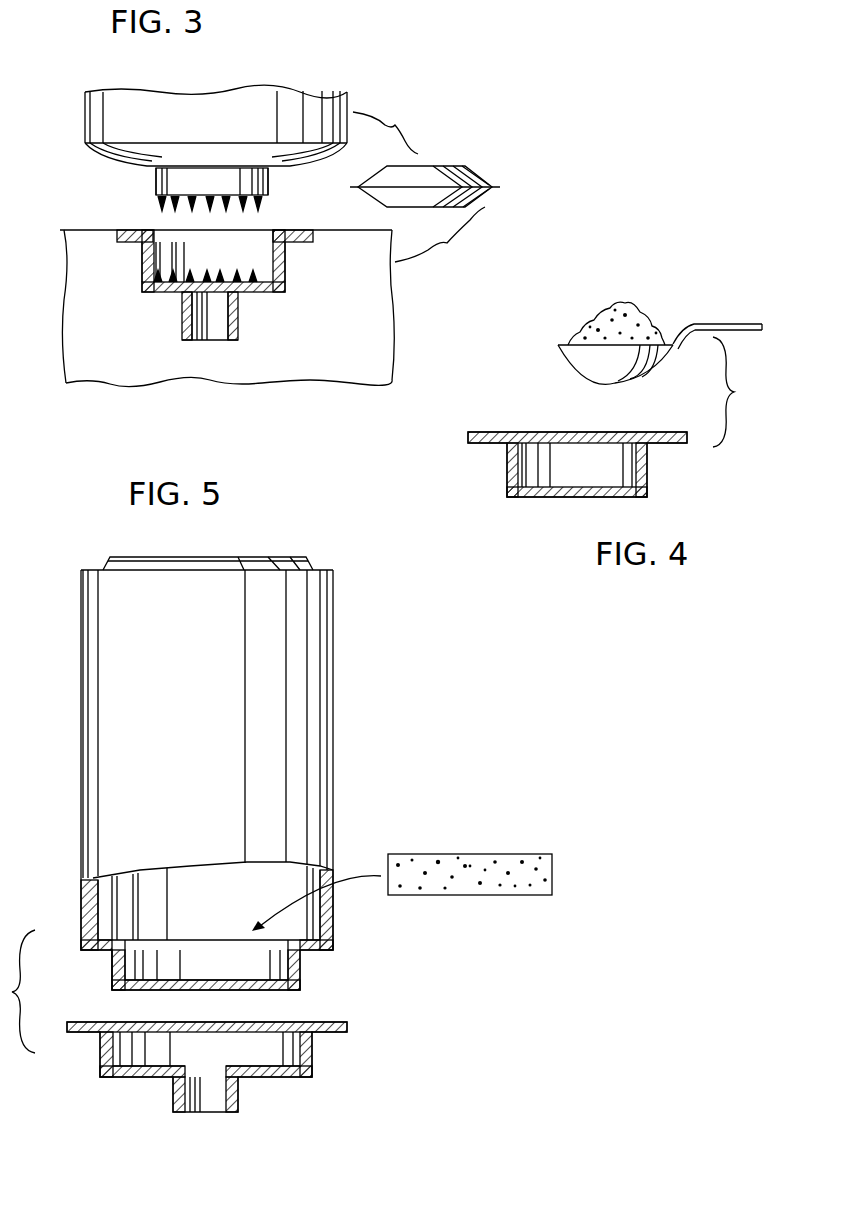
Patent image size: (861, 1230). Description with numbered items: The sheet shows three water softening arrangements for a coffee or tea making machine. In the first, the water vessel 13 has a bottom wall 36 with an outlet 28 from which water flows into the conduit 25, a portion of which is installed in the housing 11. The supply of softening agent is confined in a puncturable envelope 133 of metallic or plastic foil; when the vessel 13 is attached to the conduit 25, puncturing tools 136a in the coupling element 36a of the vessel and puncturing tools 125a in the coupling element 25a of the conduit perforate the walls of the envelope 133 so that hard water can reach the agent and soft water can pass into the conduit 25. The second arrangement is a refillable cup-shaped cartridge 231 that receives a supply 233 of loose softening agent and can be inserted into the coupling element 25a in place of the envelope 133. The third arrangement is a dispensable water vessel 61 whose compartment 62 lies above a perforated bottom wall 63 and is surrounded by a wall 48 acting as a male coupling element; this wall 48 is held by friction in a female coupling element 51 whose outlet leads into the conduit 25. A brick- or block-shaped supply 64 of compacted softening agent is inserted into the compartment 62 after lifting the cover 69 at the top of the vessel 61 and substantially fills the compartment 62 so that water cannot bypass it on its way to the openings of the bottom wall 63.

In FIG. 3, the housing 11 is at (412, 327).
In FIG. 3, the vessel 13 is at (340, 81).
In FIG. 3, the conduit 25 is at (238, 341).
In FIG. 5, the conduit 25 is at (239, 1097).
In FIG. 3, the coupling element 25a is at (284, 277).
In FIG. 3, the outlet 28 is at (280, 184).
In FIG. 3, the bottom wall 36 is at (120, 147).
In FIG. 3, the coupling element 36a is at (155, 182).
In FIG. 3, the puncturing tools 125a is at (143, 276).
In FIG. 3, the envelope 133 is at (487, 155).
In FIG. 3, the puncturing tools 136a is at (265, 203).
In FIG. 4, the refillable cup-shaped cartridge 231 is at (497, 482).
In FIG. 4, the supply of loose softening agent 233 is at (625, 302).
In FIG. 5, the wall 48 is at (112, 962).
In FIG. 5, the female coupling element 51 is at (313, 1052).
In FIG. 5, the dispensable water vessel 61 is at (348, 631).
In FIG. 5, the compartment 62 is at (267, 961).
In FIG. 5, the perforated bottom wall 63 is at (262, 990).
In FIG. 5, the supply of softening agent 64 is at (472, 862).
In FIG. 5, the cover 69 is at (248, 556).